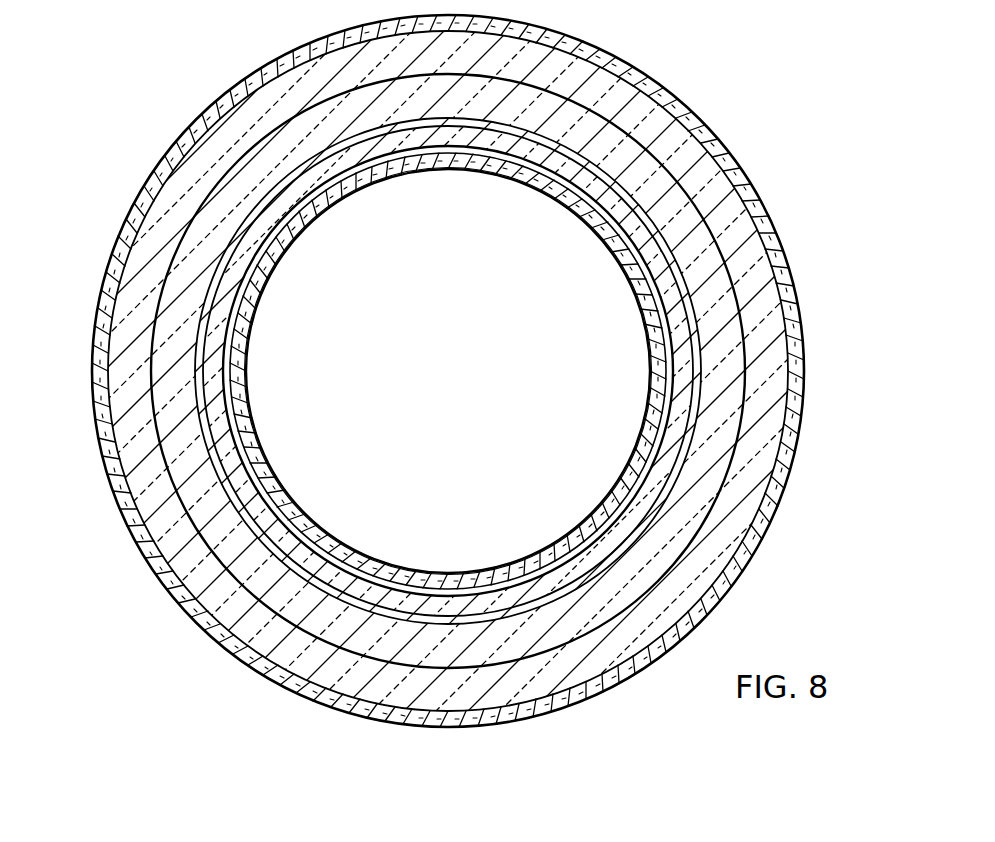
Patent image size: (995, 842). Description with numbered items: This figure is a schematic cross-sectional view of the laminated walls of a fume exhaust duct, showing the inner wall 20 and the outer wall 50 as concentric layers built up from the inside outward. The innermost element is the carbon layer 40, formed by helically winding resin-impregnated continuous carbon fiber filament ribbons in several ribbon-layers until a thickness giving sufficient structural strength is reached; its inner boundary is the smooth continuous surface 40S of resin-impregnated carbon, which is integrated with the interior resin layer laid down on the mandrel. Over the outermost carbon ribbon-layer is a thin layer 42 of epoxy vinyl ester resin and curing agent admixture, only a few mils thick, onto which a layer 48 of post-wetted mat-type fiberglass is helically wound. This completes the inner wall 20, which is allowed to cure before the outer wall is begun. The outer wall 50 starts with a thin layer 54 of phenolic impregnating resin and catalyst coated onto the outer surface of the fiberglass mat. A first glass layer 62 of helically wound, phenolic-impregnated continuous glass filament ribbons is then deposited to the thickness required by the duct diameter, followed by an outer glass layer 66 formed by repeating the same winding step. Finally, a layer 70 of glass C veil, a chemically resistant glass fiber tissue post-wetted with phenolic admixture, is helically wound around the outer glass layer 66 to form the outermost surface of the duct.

The outer wall 50 is at (156, 161).
The layer of glass C veil 70 is at (695, 118).
The outer glass layer 66 is at (765, 300).
The first glass layer 62 is at (712, 260).
The thin layer of liquid admixture 54 is at (672, 468).
The layer of mat-type fiberglass 48 is at (684, 401).
The thin layer of admixture 42 is at (618, 252).
The carbon layer 40 is at (460, 156).
The smooth continuous surface 40S is at (403, 172).
The laminated inner wall 20 is at (270, 281).